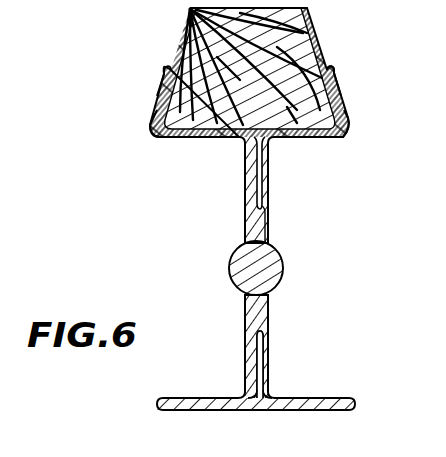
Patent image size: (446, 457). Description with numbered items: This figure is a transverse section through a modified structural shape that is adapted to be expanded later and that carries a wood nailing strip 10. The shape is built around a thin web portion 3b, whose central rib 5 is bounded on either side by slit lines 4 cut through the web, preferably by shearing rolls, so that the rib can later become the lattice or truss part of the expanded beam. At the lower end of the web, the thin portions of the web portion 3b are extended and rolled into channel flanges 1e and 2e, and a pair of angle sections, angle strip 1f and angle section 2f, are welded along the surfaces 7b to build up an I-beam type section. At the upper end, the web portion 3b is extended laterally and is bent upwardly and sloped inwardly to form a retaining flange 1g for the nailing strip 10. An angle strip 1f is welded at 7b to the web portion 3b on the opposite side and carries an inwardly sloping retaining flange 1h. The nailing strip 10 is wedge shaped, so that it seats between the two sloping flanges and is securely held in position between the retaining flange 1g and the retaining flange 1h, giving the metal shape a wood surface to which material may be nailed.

The nailing strip 10 is at (316, 38).
The retaining flange 1g is at (163, 74).
The inwardly sloping retaining flange 1h is at (336, 86).
The channel flange 1e is at (207, 139).
The angle strip 1f is at (322, 139).
The web portion 3b is at (250, 178).
The weld surfaces 7b is at (258, 177).
The slit lines 4 is at (271, 243).
The central rib 5 is at (283, 267).
The channel flange 2e is at (203, 398).
The angle section 2f is at (318, 390).